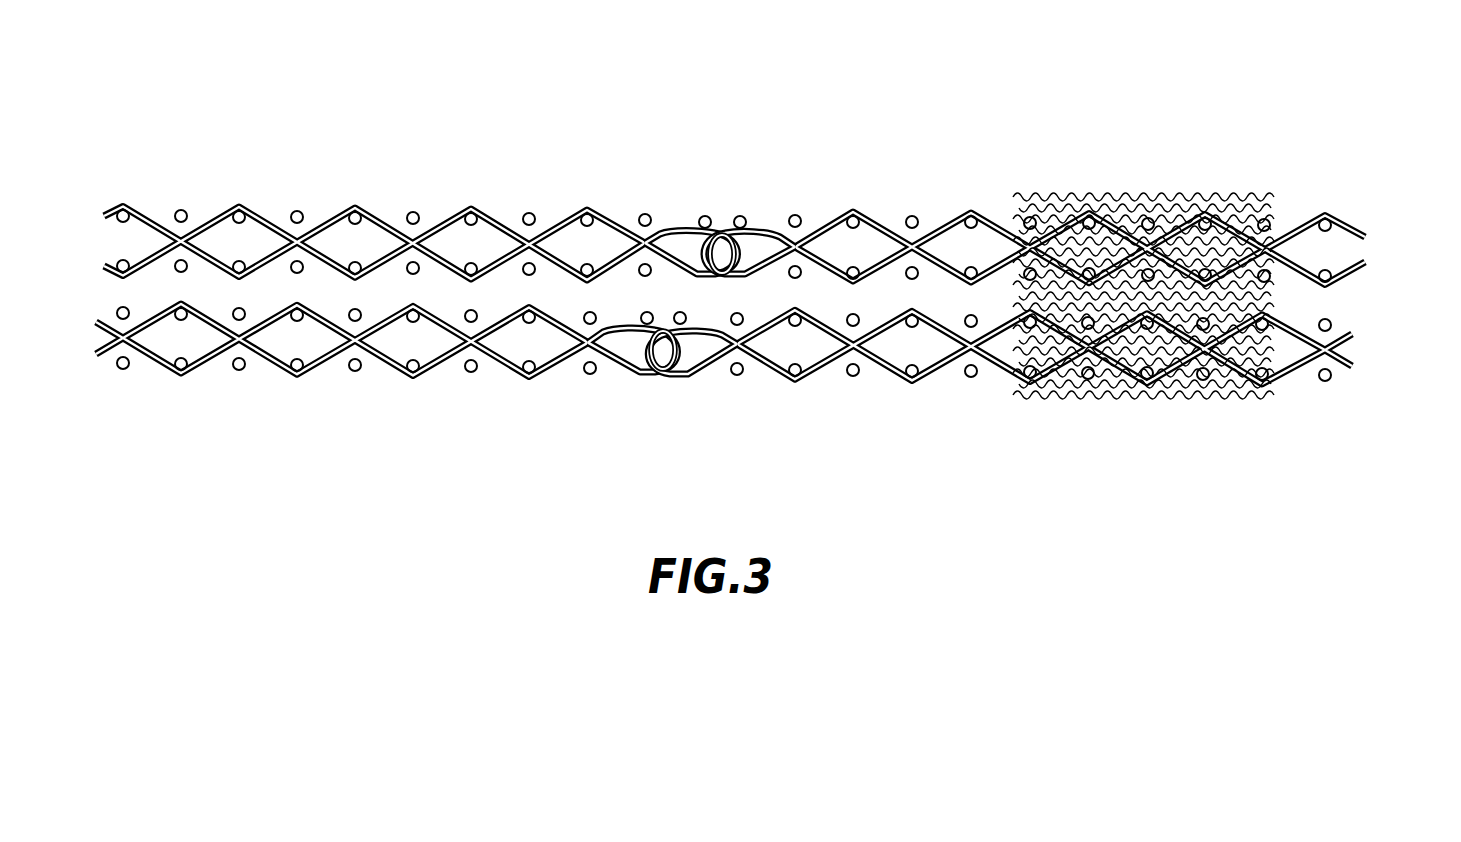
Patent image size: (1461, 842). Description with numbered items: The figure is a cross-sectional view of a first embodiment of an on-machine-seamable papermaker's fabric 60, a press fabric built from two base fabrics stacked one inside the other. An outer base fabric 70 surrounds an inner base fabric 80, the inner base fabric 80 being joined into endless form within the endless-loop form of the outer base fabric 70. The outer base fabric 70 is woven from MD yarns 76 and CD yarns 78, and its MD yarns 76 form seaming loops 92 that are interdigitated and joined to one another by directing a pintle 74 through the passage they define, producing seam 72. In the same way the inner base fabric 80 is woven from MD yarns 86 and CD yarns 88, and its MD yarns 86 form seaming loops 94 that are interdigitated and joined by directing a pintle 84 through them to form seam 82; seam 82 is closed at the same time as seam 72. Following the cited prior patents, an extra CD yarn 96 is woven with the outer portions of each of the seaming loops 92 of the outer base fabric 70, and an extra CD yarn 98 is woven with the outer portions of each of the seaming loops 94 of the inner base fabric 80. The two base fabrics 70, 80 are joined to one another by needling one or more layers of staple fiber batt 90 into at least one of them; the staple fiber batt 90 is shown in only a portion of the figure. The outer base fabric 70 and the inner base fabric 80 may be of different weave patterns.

The on-machine-seamable papermaker's fabric 60 is at (1007, 107).
The outer base fabric 70 is at (100, 276).
The seam 72 is at (754, 212).
The pintle 74 is at (762, 238).
The MD yarns 76 is at (251, 213).
The CD yarns 78 is at (415, 212).
The inner base fabric 80 is at (100, 307).
The seam 82 is at (690, 383).
The pintle 84 is at (688, 357).
The MD yarns 86 is at (190, 373).
The CD yarns 88 is at (357, 372).
The staple fiber batt 90 is at (1170, 221).
The seaming loops 92 is at (687, 229).
The seaming loops 94 is at (638, 372).
The extra CD yarn 96 is at (697, 228).
The extra CD yarn 98 is at (637, 328).